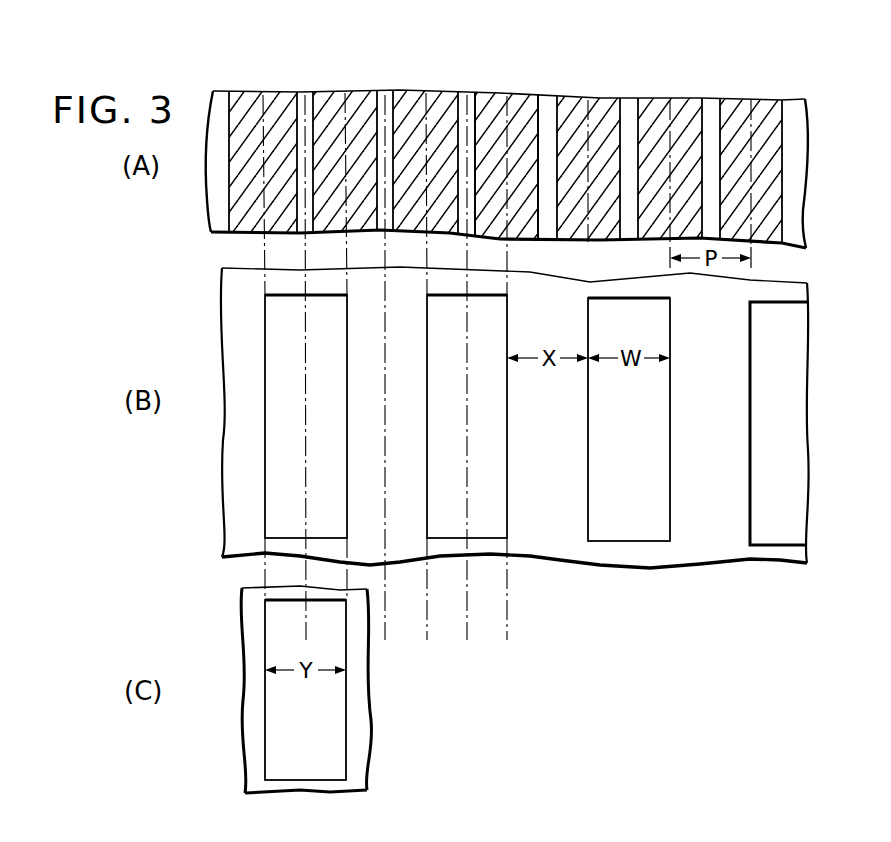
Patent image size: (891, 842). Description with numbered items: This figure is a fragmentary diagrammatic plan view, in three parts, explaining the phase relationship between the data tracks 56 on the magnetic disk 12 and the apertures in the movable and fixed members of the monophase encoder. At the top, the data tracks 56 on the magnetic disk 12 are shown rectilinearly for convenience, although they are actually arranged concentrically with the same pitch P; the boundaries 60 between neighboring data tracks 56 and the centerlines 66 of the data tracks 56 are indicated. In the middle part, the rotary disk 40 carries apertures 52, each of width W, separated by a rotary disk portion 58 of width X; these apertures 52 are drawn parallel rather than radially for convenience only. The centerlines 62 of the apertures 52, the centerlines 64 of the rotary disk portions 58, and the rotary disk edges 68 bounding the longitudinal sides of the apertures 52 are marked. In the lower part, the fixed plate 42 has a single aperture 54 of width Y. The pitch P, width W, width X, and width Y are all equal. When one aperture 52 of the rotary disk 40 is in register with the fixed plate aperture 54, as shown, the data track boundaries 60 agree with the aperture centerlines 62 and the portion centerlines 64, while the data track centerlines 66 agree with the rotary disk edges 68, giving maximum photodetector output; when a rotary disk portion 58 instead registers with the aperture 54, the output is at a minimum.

The magnetic disk 12 is at (525, 142).
The rotary disk 40 is at (808, 289).
The fixed plate 42 is at (369, 683).
The apertures 52 is at (426, 446).
The aperture 54 is at (335, 723).
The data tracks 56 is at (308, 234).
The rotary disk portion 58 is at (583, 437).
The boundaries 60 is at (374, 92).
The centerlines 62 is at (304, 356).
The centerlines 64 is at (385, 358).
The centerlines 66 is at (486, 96).
The rotary disk edges 68 is at (347, 482).